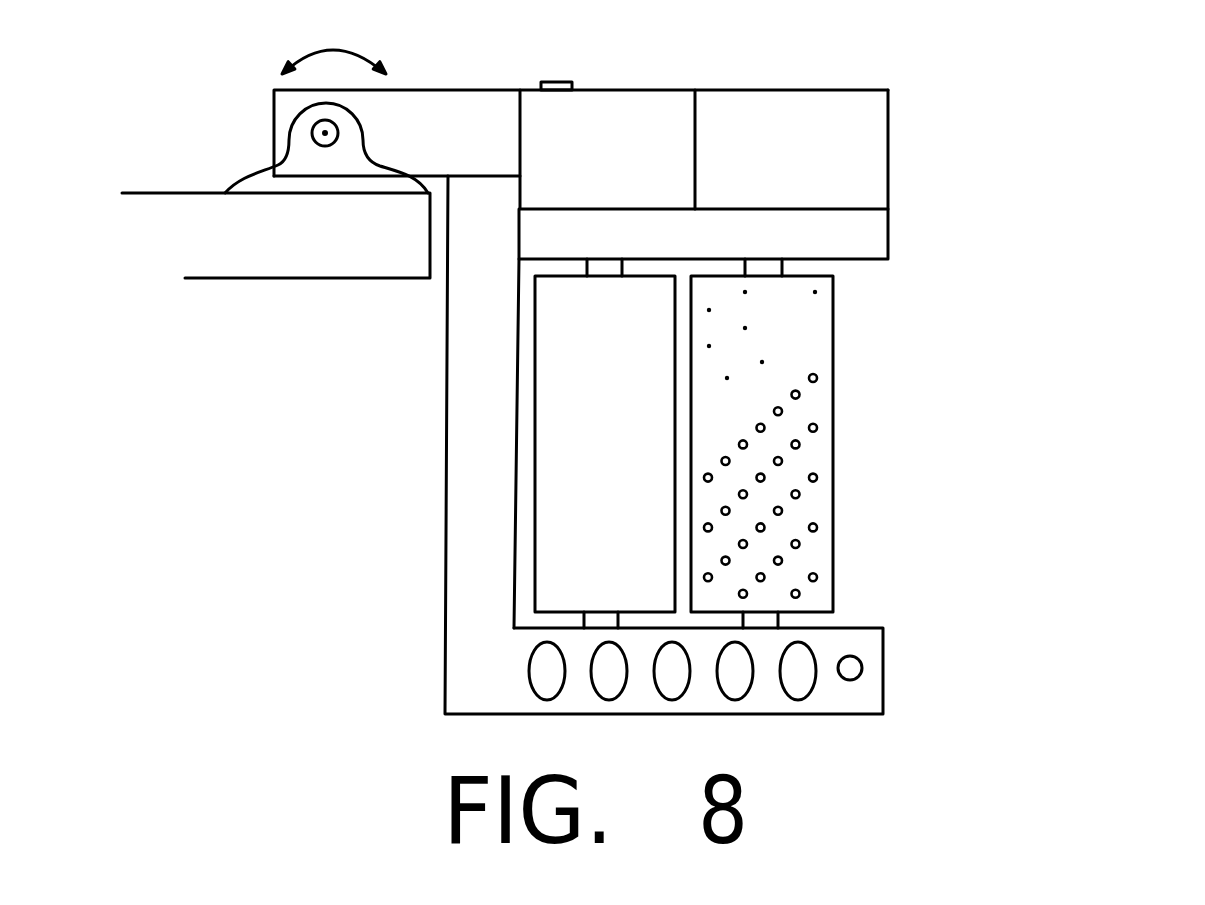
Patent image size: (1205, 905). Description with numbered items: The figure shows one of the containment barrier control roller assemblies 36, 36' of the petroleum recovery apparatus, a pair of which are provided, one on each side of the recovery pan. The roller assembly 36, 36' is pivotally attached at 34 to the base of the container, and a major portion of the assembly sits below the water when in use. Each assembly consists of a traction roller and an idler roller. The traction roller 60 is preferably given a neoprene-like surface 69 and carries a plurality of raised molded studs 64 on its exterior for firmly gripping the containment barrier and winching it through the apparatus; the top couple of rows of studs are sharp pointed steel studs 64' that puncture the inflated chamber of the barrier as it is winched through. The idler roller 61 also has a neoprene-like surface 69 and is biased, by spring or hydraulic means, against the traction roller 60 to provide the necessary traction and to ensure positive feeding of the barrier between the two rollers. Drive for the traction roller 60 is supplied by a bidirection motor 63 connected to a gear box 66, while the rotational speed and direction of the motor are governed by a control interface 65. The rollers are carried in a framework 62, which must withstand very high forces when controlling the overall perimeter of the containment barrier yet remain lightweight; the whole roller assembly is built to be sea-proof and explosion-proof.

The pivotal attachment 34 is at (322, 133).
The containment barrier control roller assembly 36 is at (882, 444).
The containment barrier control roller assembly 36' is at (966, 443).
The traction roller 60 is at (833, 508).
The idler roller 61 is at (572, 545).
The framework 62 is at (820, 696).
The bidirection motor 63 is at (837, 162).
The raised molded studs 64 is at (857, 486).
The sharp pointed steel studs 64' is at (860, 333).
The control interface 65 is at (637, 142).
The gear box 66 is at (838, 241).
The neoprene-like surface 69 is at (575, 356).